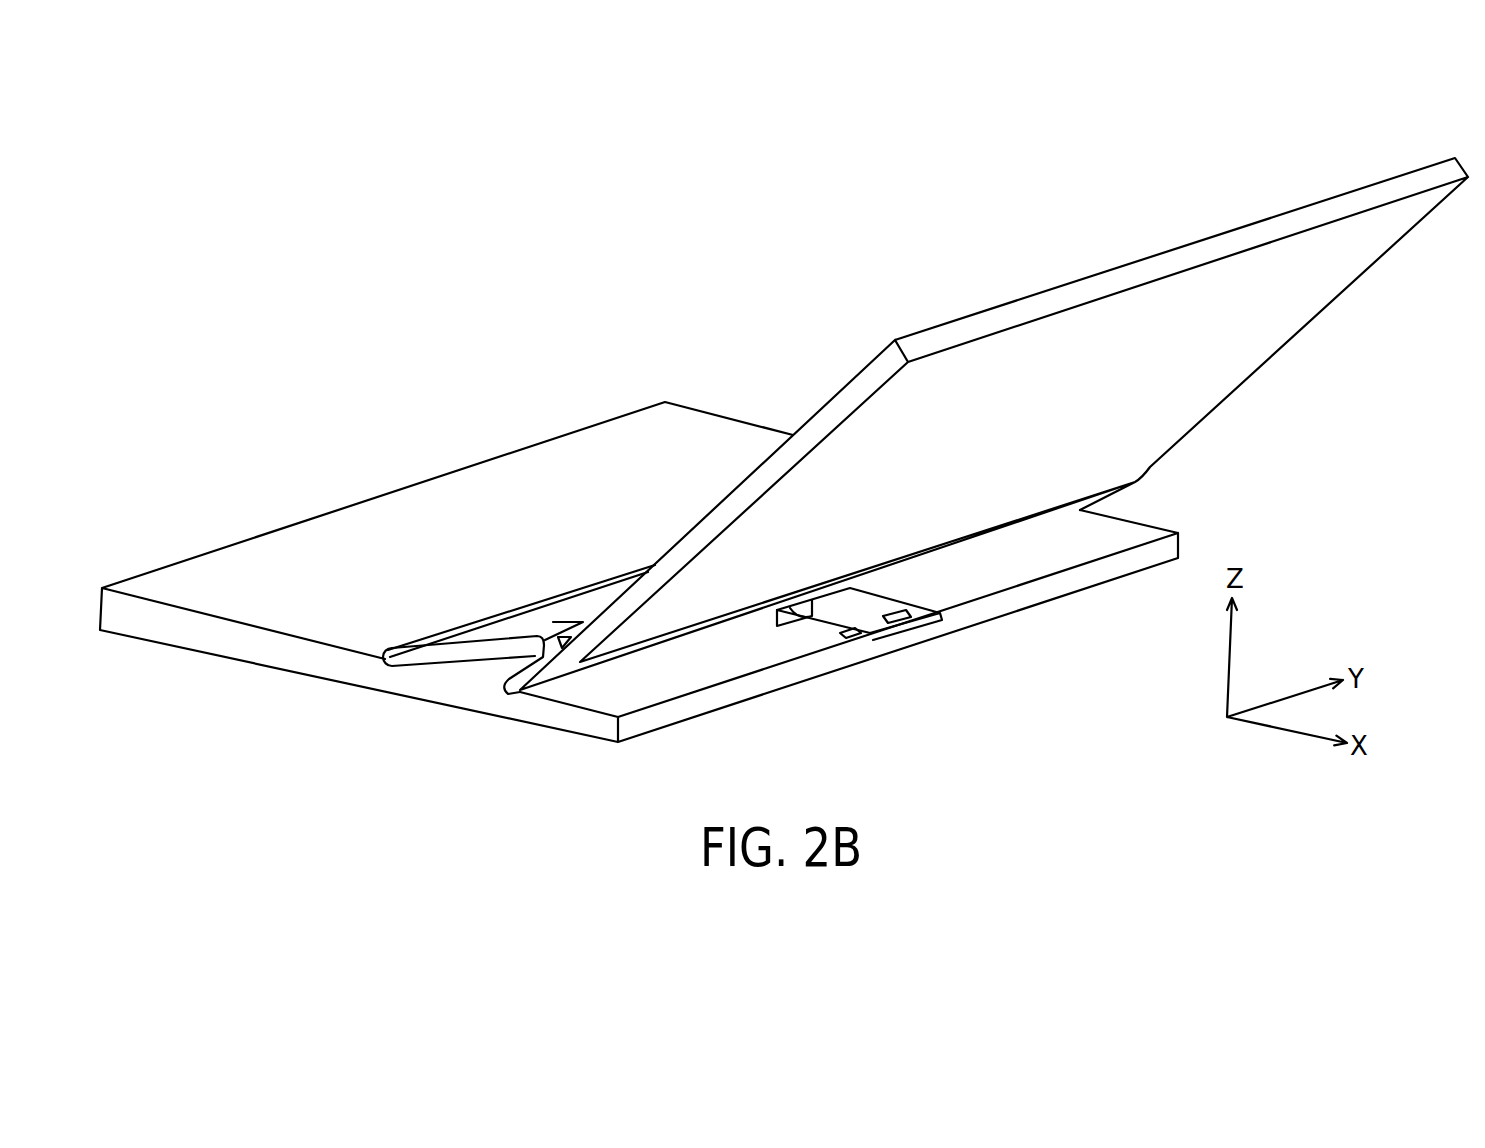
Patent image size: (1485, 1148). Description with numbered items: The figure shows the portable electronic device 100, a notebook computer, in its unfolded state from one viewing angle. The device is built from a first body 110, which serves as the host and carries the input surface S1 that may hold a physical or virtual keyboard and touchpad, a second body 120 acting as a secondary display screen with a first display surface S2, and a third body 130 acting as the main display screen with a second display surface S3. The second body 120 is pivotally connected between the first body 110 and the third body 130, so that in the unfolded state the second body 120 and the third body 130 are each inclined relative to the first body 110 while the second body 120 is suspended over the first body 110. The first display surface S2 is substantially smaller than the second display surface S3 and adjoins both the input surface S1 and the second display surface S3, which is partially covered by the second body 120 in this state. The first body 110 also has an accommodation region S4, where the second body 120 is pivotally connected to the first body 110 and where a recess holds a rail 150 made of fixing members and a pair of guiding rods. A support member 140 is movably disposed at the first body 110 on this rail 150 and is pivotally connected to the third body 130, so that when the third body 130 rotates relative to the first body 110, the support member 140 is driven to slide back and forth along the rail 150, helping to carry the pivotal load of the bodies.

The portable electronic device 100 is at (1188, 171).
The first body 110 is at (270, 646).
The second body 120 is at (463, 653).
The third body 130 is at (1255, 348).
The support member 140 is at (792, 610).
The rail 150 is at (872, 618).
The input surface S1 is at (365, 532).
The first display surface S2 is at (573, 600).
The second display surface S3 is at (829, 388).
The accommodation region S4 is at (587, 690).